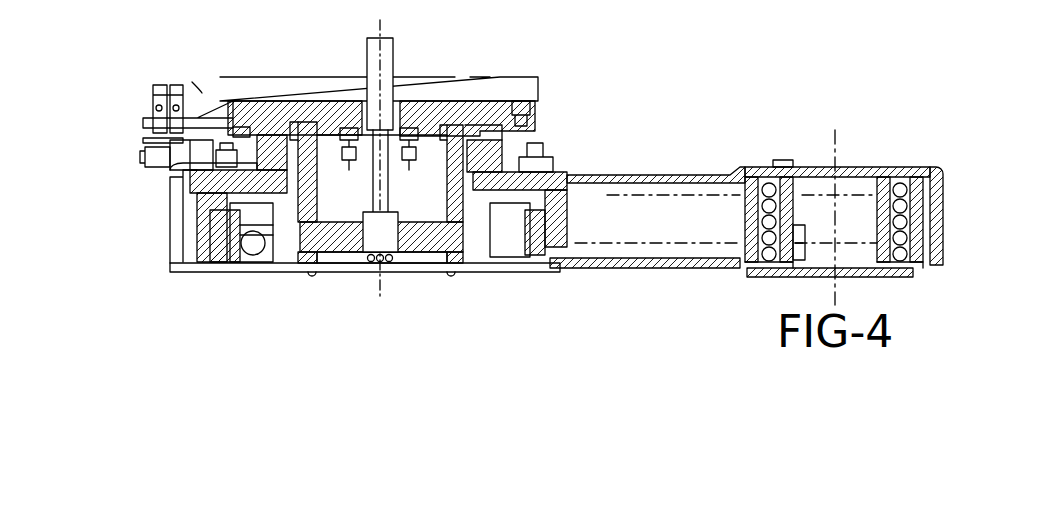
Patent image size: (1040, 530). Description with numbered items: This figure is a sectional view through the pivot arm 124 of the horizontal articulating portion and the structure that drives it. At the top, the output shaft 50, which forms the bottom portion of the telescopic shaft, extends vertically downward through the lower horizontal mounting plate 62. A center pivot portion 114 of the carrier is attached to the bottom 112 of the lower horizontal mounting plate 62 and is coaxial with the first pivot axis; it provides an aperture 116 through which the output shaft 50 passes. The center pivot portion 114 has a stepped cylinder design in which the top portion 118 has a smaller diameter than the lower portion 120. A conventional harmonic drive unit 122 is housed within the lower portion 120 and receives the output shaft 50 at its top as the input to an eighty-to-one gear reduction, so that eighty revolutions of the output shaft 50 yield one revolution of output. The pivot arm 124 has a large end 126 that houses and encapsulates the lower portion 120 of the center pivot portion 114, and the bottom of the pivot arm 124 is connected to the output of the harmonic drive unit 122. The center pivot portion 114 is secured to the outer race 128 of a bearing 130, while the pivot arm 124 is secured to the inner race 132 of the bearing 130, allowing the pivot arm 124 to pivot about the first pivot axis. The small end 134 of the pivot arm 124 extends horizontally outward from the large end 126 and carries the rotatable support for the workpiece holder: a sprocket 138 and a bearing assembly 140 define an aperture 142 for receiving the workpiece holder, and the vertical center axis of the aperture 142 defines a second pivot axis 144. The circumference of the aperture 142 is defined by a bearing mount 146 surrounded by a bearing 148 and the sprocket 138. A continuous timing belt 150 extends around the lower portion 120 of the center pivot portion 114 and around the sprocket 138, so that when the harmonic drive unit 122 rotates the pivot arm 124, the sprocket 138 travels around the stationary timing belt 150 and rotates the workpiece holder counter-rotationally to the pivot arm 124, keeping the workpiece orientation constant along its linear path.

The lower horizontal mounting plate 62 is at (282, 80).
The bottom of the lower horizontal mounting plate 112 is at (540, 111).
The center pivot portion 114 is at (500, 135).
The aperture 116 is at (388, 128).
The top portion 118 is at (528, 104).
The lower portion 120 is at (565, 222).
The harmonic drive unit 122 is at (423, 212).
The pivot arm 124 is at (622, 272).
The large end 126 is at (375, 285).
The output shaft 50 is at (372, 192).
The outer race 128 is at (235, 222).
The bearing 130 is at (215, 263).
The inner race 132 is at (252, 265).
The small end 134 is at (880, 282).
The sprocket 138 is at (740, 177).
The bearing assembly 140 is at (912, 170).
The aperture 142 is at (880, 177).
The second pivot axis 144 is at (835, 130).
The bearing mount 146 is at (807, 235).
The bearing 148 is at (758, 278).
The timing belt 150 is at (793, 168).